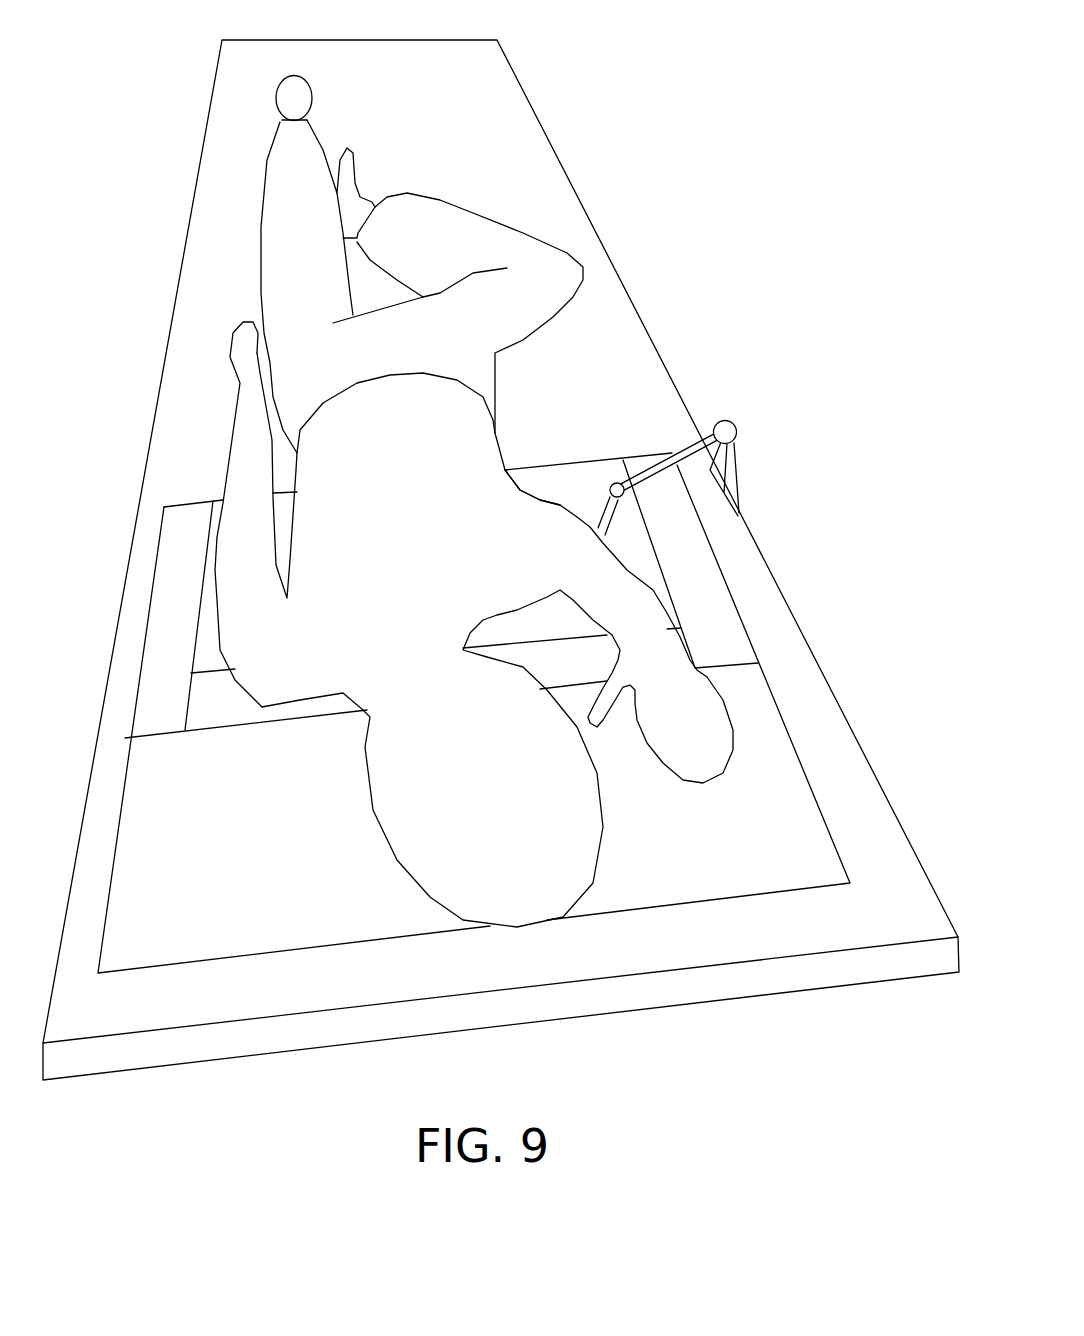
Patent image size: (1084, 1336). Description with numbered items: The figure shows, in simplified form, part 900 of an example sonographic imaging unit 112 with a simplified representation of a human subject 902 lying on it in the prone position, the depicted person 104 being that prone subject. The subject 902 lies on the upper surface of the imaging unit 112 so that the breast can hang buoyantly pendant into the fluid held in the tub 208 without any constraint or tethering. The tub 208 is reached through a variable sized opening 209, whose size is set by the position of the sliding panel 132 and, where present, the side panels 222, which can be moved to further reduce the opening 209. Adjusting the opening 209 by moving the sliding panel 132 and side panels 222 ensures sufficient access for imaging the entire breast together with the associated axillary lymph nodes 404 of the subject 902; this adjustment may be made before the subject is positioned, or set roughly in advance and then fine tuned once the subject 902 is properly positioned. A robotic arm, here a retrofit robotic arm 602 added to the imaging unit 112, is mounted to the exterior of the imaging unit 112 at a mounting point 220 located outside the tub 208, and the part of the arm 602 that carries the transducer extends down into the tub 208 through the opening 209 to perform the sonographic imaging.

The part of sonographic imaging unit 900 is at (752, 230).
The imaging unit 112 is at (672, 1040).
The variable sized opening 209 is at (562, 477).
The side panels 222 is at (175, 580).
The sliding panel 132 is at (222, 705).
The patient 104 is at (474, 484).
The human subject 902 is at (407, 530).
The axillary lymph nodes 404 is at (518, 520).
The tub 208 is at (587, 497).
The mounting point 220 is at (749, 418).
The retrofit robotic arm 602 is at (745, 430).